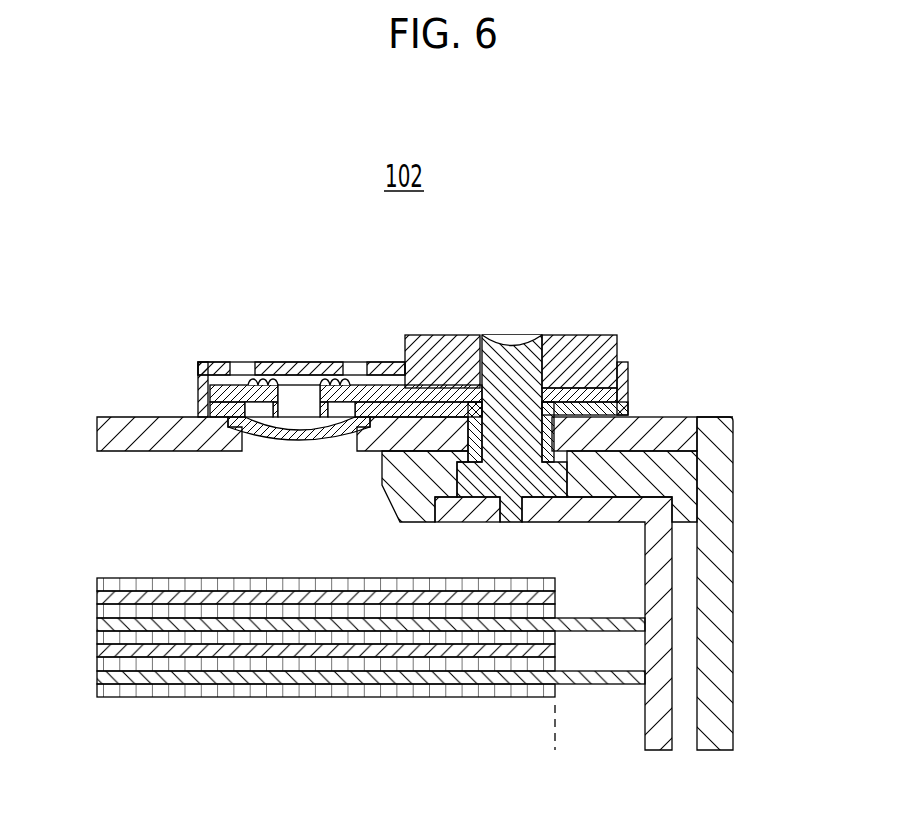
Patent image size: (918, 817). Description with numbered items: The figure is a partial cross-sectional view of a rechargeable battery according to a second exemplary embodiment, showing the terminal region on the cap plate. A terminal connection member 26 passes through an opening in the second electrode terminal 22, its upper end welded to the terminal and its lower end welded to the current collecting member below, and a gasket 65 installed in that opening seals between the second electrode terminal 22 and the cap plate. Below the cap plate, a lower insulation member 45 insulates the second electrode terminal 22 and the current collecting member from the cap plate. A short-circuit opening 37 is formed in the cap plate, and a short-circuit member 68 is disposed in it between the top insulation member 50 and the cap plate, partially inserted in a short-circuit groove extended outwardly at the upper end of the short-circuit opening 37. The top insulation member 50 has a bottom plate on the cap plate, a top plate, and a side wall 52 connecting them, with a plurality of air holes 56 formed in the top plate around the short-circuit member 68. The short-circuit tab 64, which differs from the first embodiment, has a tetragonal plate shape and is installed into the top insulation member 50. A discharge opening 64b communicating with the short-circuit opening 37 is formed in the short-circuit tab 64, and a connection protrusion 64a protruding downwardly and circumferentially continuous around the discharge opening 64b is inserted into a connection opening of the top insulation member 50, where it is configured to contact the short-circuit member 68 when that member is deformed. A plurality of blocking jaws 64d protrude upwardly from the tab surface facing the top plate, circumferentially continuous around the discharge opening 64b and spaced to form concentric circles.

The second electrode terminal 22 is at (572, 350).
The terminal connection member 26 is at (505, 362).
The short-circuit opening 37 is at (330, 452).
The lower insulation member 45 is at (663, 473).
The top insulation member 50 is at (620, 408).
The side wall 52 is at (198, 388).
The air holes 56 is at (353, 362).
The short-circuit tab 64 is at (225, 386).
The connection protrusion 64a is at (260, 452).
The discharge opening 64b is at (298, 392).
The blocking jaws 64d is at (277, 384).
The gasket 65 is at (475, 435).
The short-circuit member 68 is at (290, 440).